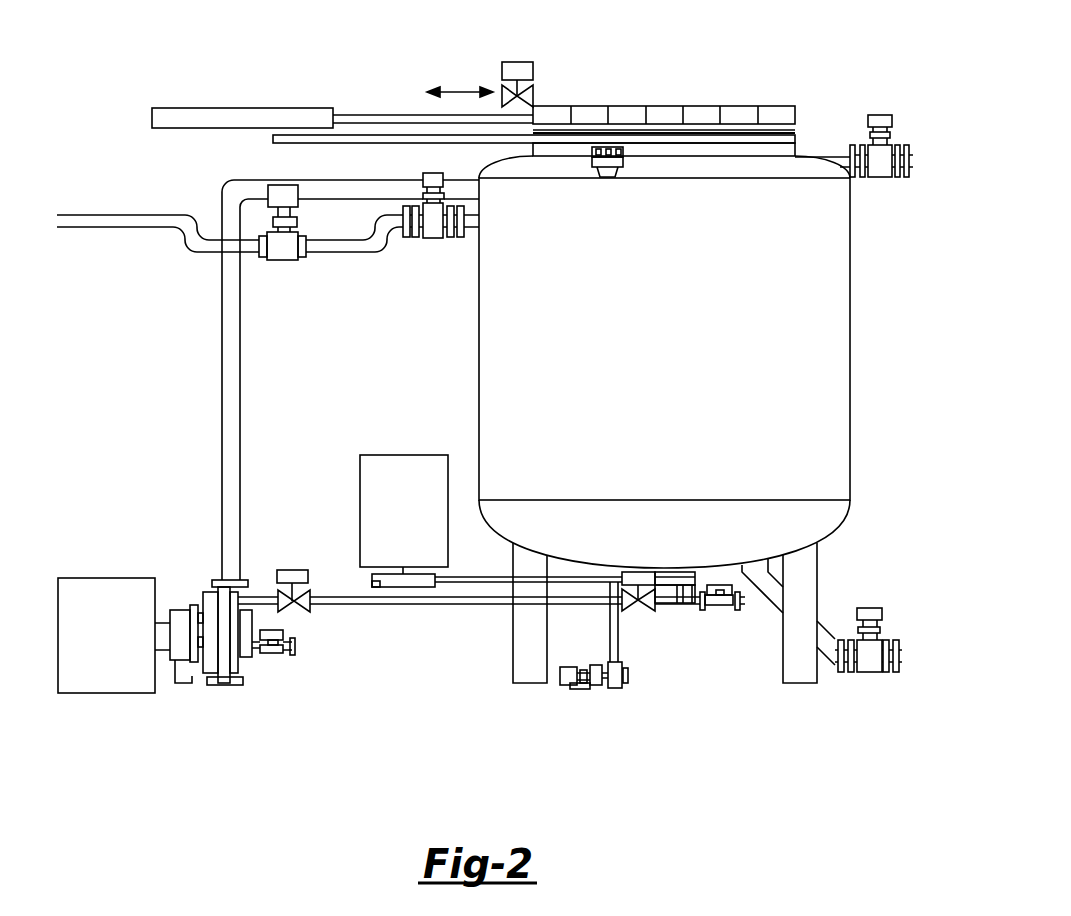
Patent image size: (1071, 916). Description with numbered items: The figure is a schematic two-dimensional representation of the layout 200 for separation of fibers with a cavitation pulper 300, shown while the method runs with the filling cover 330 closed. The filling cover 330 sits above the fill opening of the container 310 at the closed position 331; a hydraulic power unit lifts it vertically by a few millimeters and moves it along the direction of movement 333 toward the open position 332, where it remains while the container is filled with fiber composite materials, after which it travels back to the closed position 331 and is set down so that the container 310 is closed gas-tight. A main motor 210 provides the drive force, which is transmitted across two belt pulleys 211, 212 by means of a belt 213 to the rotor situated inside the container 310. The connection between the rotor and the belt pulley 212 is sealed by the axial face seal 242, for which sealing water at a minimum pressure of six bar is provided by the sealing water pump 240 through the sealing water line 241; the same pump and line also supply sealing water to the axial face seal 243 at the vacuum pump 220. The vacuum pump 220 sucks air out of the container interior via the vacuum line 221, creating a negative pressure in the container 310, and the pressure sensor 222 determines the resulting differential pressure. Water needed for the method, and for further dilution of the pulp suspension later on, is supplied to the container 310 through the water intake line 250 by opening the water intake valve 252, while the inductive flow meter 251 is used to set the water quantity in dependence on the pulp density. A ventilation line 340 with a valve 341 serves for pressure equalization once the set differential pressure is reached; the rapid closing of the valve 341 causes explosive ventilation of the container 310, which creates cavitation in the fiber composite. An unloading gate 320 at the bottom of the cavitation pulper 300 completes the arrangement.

The layout for separation of fibers 200 is at (128, 146).
The main motor 210 is at (380, 488).
The belt pulley 211 is at (382, 588).
The belt pulley 212 is at (692, 603).
The belt 213 is at (477, 583).
The vacuum pump 220 is at (185, 660).
The vacuum line 221 is at (230, 428).
The pressure sensor 222 is at (607, 168).
The sealing water pump 240 is at (583, 688).
The sealing water line 241 is at (428, 600).
The axial face seal of the rotor 242 is at (673, 607).
The axial face seal of the vacuum pump 243 is at (213, 582).
The water intake line 250 is at (83, 222).
The inductive flow meter 251 is at (275, 220).
The water intake valve 252 is at (433, 172).
The cavitation pulper 300 is at (878, 386).
The container 310 is at (852, 268).
The unloading gate 320 is at (883, 655).
The filling cover 330 is at (667, 105).
The closed position 331 is at (787, 106).
The open position 332 is at (339, 108).
The direction of movement 333 is at (462, 86).
The ventilation line 340 is at (913, 163).
The valve of ventilation line 341 is at (880, 115).